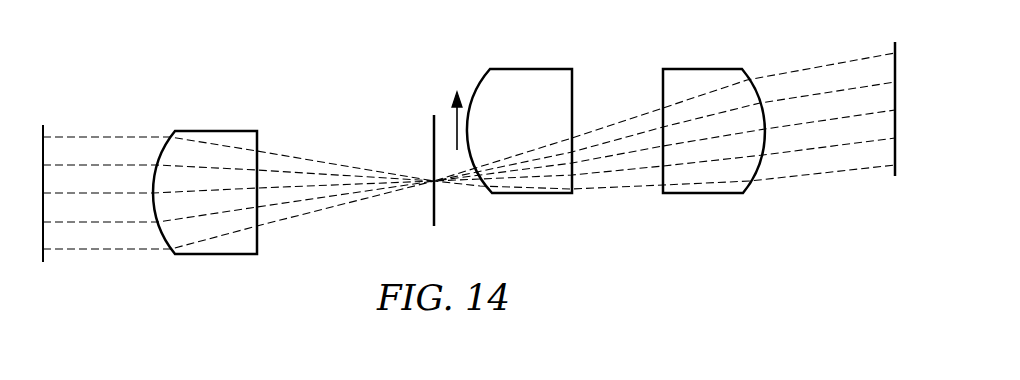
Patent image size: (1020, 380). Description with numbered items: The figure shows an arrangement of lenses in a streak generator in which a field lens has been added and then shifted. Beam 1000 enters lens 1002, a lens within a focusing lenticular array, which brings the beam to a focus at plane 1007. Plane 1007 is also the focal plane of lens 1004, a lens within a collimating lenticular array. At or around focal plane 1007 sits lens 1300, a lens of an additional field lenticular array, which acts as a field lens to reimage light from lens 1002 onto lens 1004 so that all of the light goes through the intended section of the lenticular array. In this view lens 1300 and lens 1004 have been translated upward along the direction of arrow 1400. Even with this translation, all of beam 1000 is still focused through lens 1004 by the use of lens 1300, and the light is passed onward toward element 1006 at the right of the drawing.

The beam 1000 is at (87, 137).
The lens 1002 is at (218, 132).
The plane 1007 is at (433, 202).
The arrow 1400 is at (450, 117).
The lens 1300 is at (540, 68).
The lens 1004 is at (700, 68).
The image plane / detector 1006 is at (892, 173).